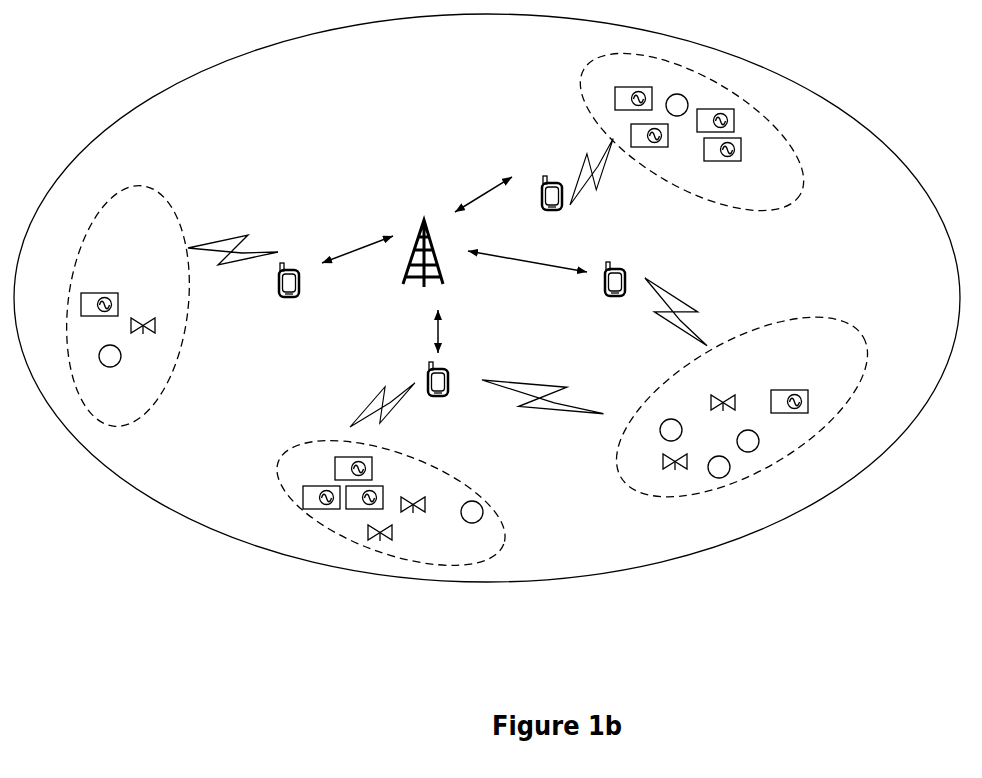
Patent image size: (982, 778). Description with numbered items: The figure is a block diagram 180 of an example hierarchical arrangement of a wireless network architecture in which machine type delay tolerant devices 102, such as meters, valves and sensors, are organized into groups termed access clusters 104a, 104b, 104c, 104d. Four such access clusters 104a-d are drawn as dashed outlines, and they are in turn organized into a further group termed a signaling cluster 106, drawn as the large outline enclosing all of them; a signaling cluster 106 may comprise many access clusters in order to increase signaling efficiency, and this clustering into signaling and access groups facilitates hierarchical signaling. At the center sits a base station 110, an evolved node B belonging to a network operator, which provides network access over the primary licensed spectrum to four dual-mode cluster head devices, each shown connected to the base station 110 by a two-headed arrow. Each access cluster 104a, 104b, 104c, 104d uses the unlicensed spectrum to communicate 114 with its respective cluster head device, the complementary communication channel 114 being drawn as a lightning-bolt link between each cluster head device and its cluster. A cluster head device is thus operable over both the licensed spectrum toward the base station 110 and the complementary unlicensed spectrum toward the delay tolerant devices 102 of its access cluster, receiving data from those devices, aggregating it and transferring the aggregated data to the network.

The block diagram 180 is at (70, 40).
The signaling cluster 106 is at (320, 27).
The base station 110 is at (415, 225).
The complementary communication channel 114 is at (235, 236).
The delay tolerant devices 102 is at (127, 332).
The access cluster 104a is at (173, 402).
The access cluster 104b is at (475, 554).
The access cluster 104c is at (845, 351).
The access cluster 104d is at (772, 202).